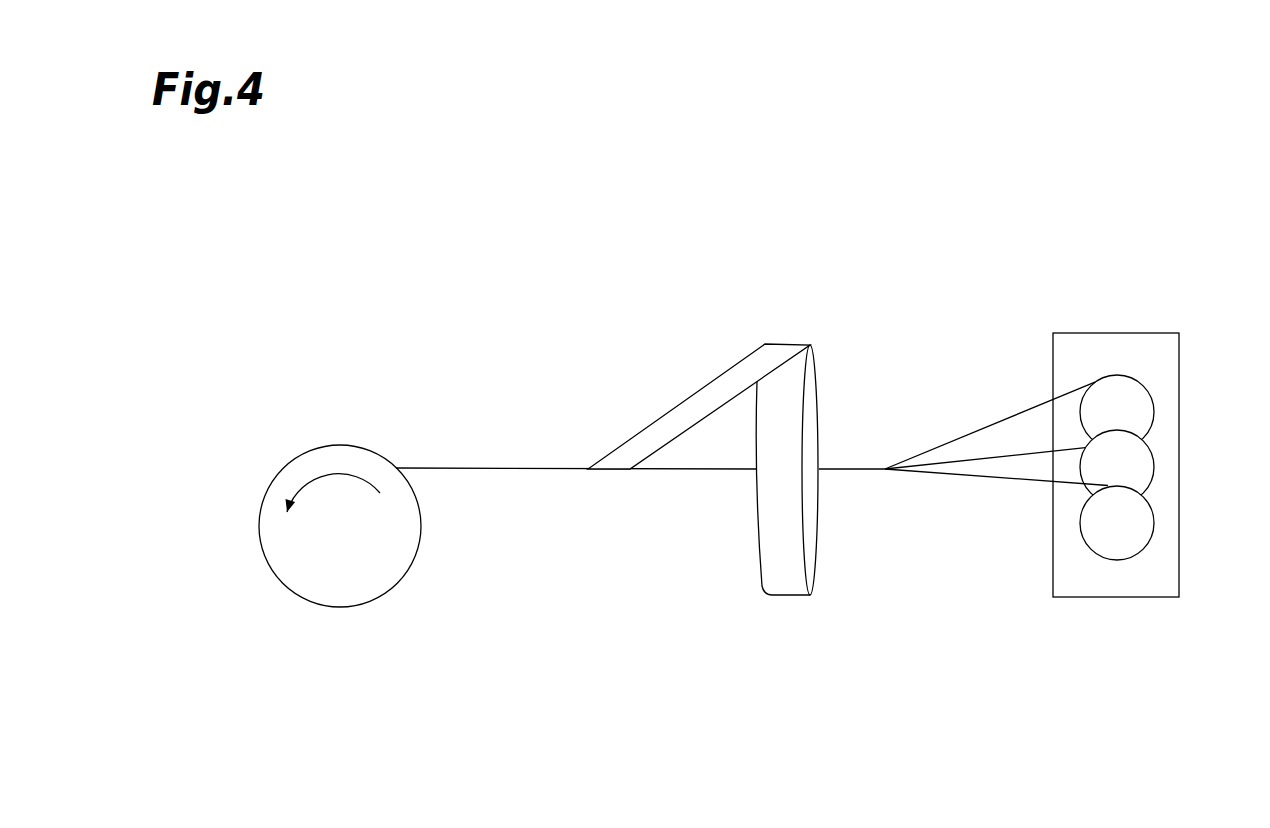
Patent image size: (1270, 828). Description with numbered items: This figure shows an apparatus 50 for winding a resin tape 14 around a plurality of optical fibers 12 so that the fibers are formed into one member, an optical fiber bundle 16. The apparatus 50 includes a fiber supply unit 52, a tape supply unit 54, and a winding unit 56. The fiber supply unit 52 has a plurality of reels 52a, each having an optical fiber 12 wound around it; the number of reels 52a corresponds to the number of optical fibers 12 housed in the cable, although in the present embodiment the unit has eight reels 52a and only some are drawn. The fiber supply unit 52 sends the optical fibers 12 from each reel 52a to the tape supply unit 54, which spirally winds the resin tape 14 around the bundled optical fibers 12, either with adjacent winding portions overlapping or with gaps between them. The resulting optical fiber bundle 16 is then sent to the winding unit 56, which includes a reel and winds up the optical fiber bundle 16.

The optical fibers 12 is at (1000, 420).
The resin tape 14 is at (701, 400).
The optical fiber bundle 16 is at (510, 468).
The apparatus 50 is at (988, 257).
The fiber supply unit 52 is at (1145, 333).
The reels 52a is at (1155, 412).
The tape supply unit 54 is at (788, 396).
The winding unit 56 is at (340, 607).